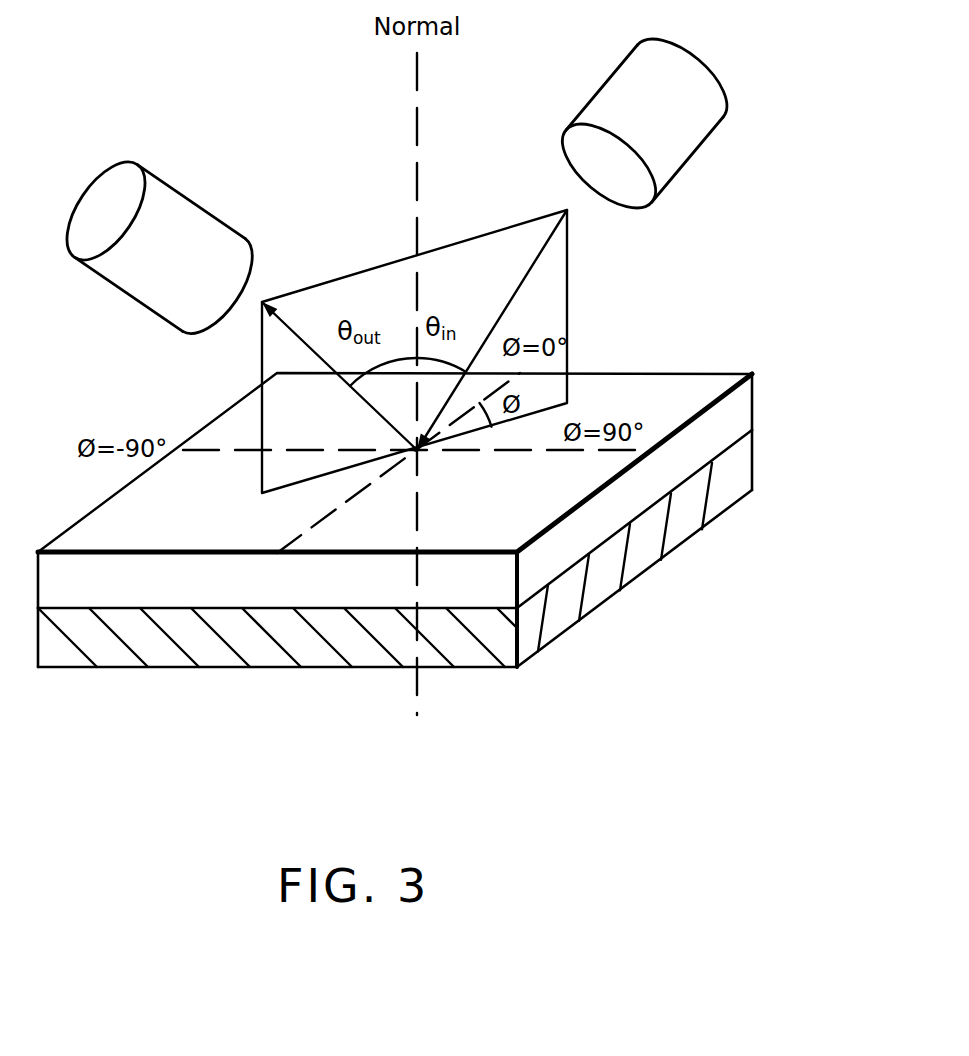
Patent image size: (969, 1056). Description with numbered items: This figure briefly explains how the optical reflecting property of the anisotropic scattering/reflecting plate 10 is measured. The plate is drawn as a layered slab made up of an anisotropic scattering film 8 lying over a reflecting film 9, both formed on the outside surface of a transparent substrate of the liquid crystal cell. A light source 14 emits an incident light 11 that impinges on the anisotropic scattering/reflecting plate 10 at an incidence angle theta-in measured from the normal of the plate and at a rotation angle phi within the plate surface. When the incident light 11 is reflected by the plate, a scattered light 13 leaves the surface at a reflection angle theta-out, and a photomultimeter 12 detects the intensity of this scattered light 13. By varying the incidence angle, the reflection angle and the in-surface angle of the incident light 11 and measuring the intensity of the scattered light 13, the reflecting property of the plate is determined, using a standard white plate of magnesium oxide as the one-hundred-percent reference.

The anisotropic scattering film 8 is at (745, 424).
The reflecting film 9 is at (411, 548).
The anisotropic scattering/reflecting plate 10 is at (444, 520).
The incident light 11 is at (533, 268).
The photomultimeter 12 is at (200, 207).
The scattered light 13 is at (285, 304).
The light source 14 is at (687, 160).